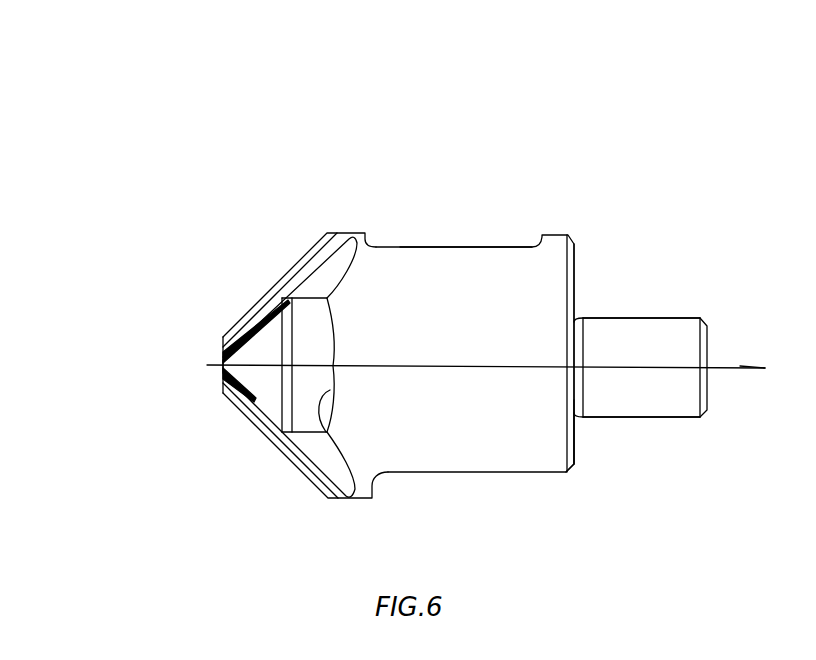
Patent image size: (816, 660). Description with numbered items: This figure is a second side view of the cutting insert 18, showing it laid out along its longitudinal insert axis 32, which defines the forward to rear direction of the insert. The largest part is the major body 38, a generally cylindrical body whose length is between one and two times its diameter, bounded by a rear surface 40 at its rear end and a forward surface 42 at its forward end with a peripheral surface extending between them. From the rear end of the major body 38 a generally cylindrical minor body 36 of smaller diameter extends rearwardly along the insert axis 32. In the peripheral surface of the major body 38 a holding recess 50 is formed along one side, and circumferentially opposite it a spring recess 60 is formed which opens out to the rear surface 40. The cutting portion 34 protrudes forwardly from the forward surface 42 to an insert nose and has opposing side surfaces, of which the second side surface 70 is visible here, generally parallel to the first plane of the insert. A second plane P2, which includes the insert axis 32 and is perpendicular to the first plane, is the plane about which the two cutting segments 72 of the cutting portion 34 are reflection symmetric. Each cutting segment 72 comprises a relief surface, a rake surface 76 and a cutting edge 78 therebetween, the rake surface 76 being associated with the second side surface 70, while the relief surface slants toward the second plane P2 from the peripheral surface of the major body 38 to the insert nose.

The cutting insert 18 is at (163, 98).
The insert axis 32 is at (732, 375).
The cutting portion 34 is at (278, 163).
The minor body 36 is at (680, 318).
The major body 38 is at (412, 207).
The rear surface 40 is at (575, 270).
The forward surface 42 is at (327, 432).
The holding recess 50 is at (475, 242).
The spring recess 60 is at (520, 485).
The second side surface 70 is at (265, 377).
The cutting segment 72 is at (228, 237).
The rake surface 76 is at (289, 272).
The cutting edge 78 is at (233, 333).
The second plane P2 is at (753, 367).